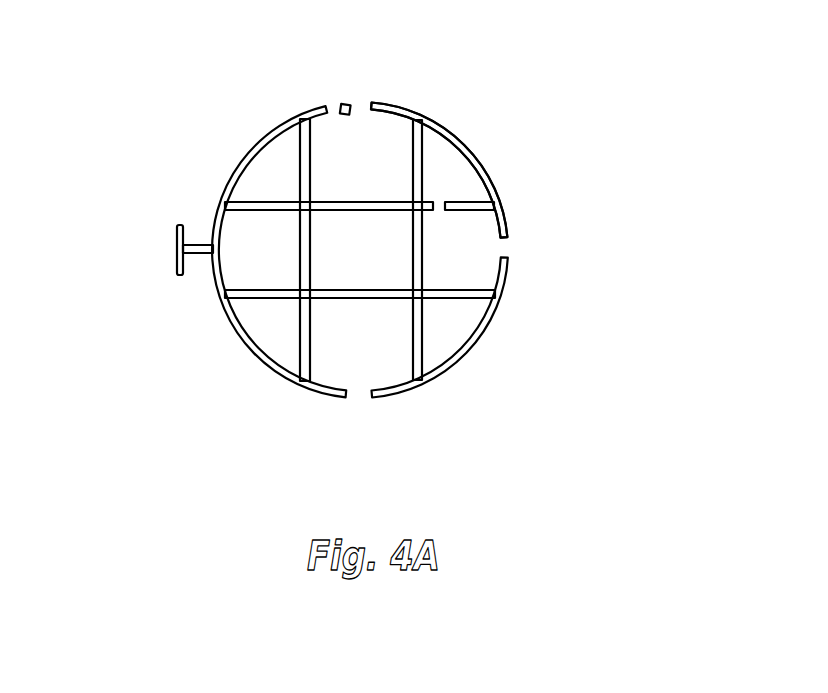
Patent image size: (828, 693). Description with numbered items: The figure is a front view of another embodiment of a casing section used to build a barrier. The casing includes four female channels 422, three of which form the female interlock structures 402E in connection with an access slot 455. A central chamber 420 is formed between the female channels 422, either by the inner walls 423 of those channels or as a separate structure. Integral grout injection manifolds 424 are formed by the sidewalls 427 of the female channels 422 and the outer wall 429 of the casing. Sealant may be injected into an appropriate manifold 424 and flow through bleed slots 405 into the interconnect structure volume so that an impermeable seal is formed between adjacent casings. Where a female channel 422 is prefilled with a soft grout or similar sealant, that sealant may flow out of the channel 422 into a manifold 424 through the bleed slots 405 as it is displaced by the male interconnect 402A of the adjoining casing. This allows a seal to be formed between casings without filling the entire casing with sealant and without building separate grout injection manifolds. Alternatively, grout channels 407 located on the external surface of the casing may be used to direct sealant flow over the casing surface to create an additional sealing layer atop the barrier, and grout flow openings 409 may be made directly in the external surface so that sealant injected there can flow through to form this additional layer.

The grout channel 407 is at (273, 137).
The grout flow opening 409 is at (335, 104).
The female interlock structure 402E is at (364, 118).
The sidewall 427 is at (420, 160).
The grout injection manifold 424 is at (466, 190).
The outer wall 429 is at (492, 187).
The bleed slot 405 is at (441, 210).
The access slot 455 is at (508, 258).
The central chamber 420 is at (378, 265).
The female channel 422 is at (327, 332).
The inner wall 423 is at (390, 297).
The male interconnect 402A is at (177, 240).